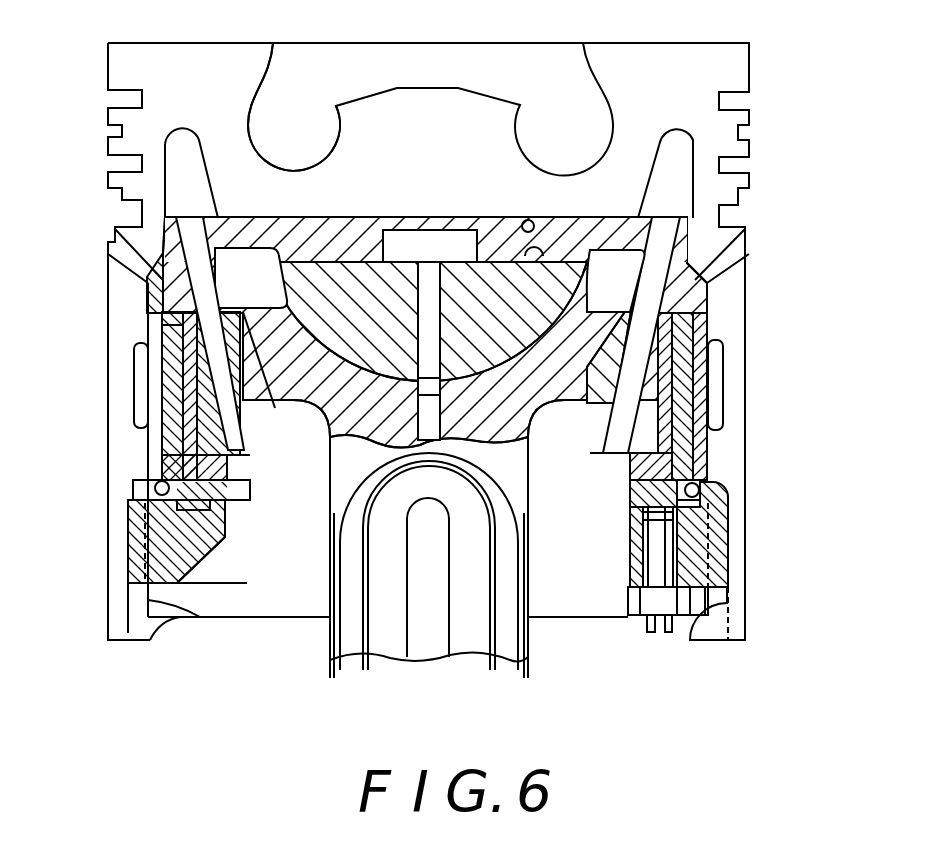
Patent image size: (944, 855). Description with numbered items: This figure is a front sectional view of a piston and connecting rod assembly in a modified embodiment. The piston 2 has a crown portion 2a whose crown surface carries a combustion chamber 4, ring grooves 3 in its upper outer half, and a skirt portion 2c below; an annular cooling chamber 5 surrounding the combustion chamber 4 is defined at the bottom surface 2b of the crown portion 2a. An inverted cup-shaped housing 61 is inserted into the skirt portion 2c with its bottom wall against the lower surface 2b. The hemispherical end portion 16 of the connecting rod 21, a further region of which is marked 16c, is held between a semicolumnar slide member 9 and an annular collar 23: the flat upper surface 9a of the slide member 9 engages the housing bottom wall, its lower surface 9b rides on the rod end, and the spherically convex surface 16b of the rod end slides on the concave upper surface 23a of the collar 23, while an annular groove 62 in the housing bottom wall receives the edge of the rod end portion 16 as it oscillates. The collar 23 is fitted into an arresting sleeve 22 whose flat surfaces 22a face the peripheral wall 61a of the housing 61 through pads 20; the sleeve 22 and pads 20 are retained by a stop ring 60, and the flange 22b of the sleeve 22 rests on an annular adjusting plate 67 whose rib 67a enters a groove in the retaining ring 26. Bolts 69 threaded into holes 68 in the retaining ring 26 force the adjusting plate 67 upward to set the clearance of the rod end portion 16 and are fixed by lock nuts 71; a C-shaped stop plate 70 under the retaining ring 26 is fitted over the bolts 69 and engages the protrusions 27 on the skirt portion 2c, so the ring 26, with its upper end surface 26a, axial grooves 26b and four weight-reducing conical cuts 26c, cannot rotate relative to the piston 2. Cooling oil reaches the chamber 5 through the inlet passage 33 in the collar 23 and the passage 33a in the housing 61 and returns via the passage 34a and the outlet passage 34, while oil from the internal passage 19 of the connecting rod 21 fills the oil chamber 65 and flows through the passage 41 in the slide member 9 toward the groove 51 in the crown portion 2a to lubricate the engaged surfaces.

The piston 2 is at (243, 38).
The crown portion 2a is at (414, 142).
The bottom surface of the crown portion 2b is at (528, 220).
The skirt portion 2c is at (740, 455).
The ring grooves 3 is at (125, 98).
The combustion chamber 4 is at (268, 114).
The annular cooling chamber 5 is at (174, 162).
The semicolumnar sliding member 9 is at (483, 337).
The flat upper surface of the slide member 9a is at (540, 284).
The lower surface of the slide member 9b is at (495, 406).
The end portion of the connecting rod 16 is at (547, 362).
The annular convex surface of the rod end portion 16b is at (283, 421).
The piston crown portion 16c is at (351, 316).
The internal oil passage 19 is at (418, 410).
The pad member 20 is at (172, 384).
The connecting rod 21 is at (472, 642).
The arresting sleeve 22 is at (188, 443).
The outer peripheral flat surfaces 22a is at (165, 414).
The flange 22b is at (220, 470).
The annular collar 23 is at (197, 328).
The upper surface of the annular collar 23a is at (262, 348).
The retaining ring 26 is at (163, 555).
The upper end surface of the retaining tube 26a is at (129, 571).
The axial grooves 26b is at (134, 545).
The partial conical cuts 26c is at (210, 560).
The protrusions 27 is at (185, 612).
The inlet oil passage 33 is at (627, 447).
The oil passage in the housing 33a is at (690, 211).
The outlet oil passage 34 is at (227, 440).
The oil passage in the housing 34a is at (200, 225).
The oil passage in the slide member 41 is at (432, 302).
The groove in the crown portion 51 is at (430, 246).
The stop ring 60 is at (158, 496).
The inverted cup-shaped housing 61 is at (490, 214).
The peripheral wall of the housing 61a is at (152, 359).
The annular groove 62 is at (616, 281).
The oil chamber 65 is at (237, 295).
The annular adjusting plate 67 is at (643, 502).
The annular rib 67a is at (207, 517).
The threaded holes 68 is at (728, 560).
The bolts 69 is at (640, 555).
The C-shaped stop plate 70 is at (660, 612).
The lock nuts 71 is at (630, 602).